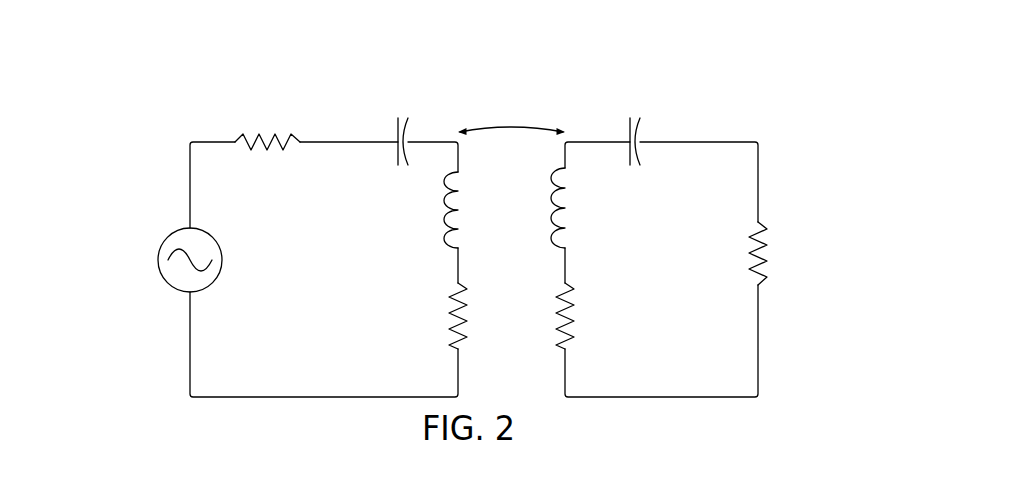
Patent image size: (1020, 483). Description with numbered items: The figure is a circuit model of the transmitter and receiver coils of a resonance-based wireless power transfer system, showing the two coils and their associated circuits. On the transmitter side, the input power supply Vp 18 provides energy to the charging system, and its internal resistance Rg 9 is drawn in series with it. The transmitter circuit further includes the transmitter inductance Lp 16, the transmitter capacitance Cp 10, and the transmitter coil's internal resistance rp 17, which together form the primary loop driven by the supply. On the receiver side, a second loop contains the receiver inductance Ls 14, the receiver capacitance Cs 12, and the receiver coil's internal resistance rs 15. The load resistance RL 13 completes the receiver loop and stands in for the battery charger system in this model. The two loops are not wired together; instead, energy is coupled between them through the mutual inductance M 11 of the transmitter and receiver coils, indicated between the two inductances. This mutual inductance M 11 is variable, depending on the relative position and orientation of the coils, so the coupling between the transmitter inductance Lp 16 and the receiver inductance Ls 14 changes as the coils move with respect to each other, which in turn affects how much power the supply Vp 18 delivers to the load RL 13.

The internal resistance Rg 9 is at (272, 125).
The transmitter capacitance Cp 10 is at (398, 110).
The mutual inductance M 11 is at (504, 86).
The receiver capacitance Cs 12 is at (631, 108).
The load resistance RL 13 is at (775, 250).
The receiver inductance Ls 14 is at (568, 228).
The receiver internal resistance rs 15 is at (582, 332).
The transmitter inductance Lp 16 is at (438, 218).
The transmitter internal resistance rp 17 is at (438, 306).
The input power supply Vp 18 is at (150, 282).